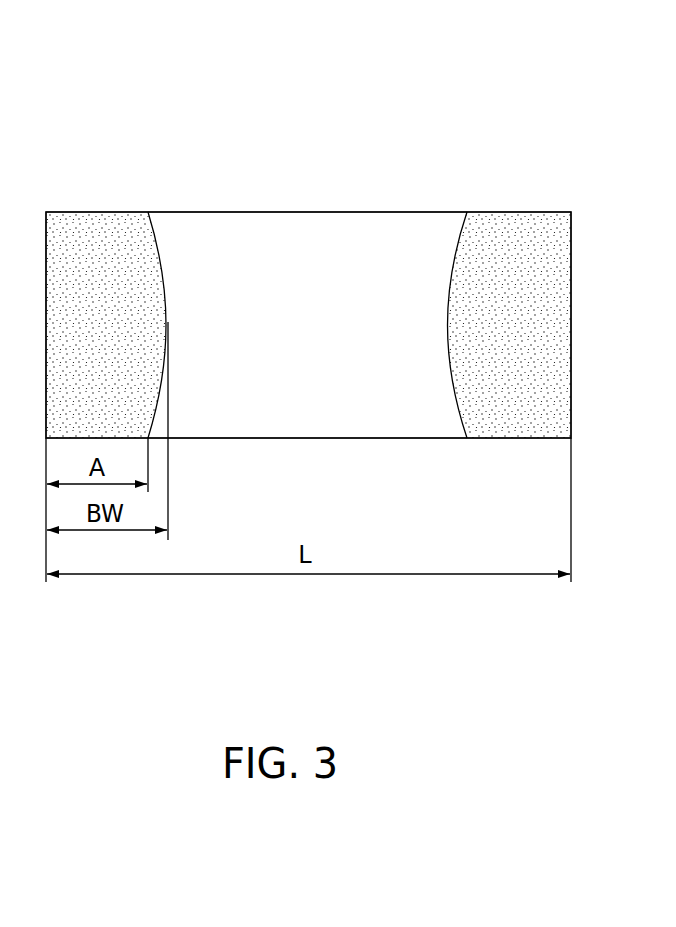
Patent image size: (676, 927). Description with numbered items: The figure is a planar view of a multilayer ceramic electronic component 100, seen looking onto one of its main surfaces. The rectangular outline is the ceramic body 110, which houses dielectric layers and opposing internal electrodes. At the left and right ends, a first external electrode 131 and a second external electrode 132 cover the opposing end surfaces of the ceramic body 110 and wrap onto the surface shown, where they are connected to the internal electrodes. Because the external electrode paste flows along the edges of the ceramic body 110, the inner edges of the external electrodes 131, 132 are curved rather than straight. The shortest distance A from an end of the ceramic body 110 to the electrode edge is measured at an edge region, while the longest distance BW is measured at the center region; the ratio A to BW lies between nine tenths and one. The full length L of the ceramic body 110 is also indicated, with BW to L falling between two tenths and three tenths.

The multilayer ceramic electronic component 100 is at (128, 30).
The ceramic body 110 is at (312, 228).
The first external electrode 131 is at (91, 228).
The second external electrode 132 is at (514, 228).